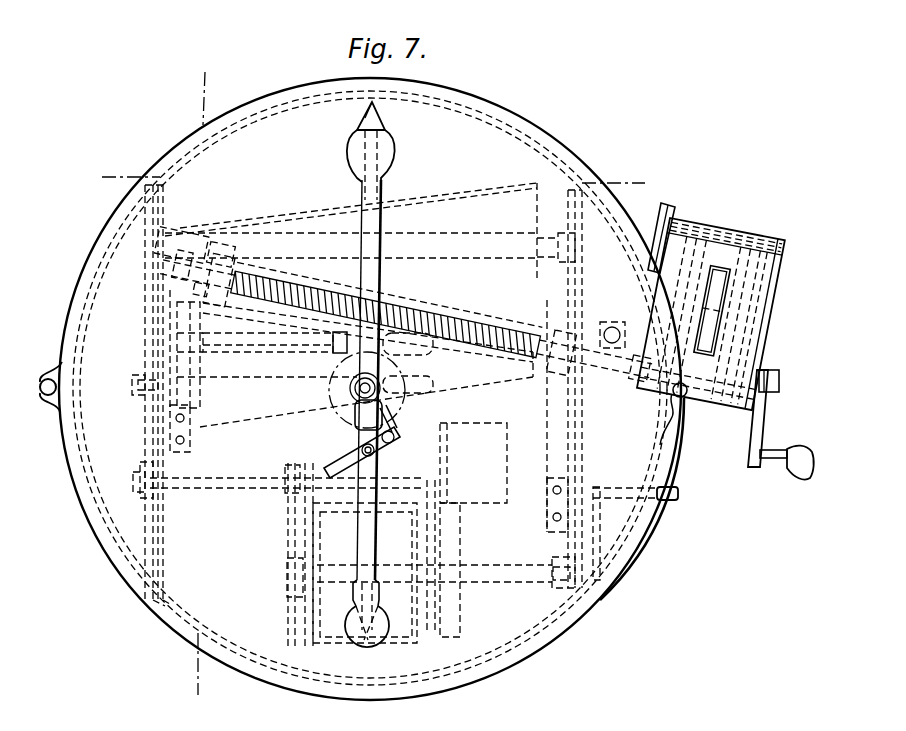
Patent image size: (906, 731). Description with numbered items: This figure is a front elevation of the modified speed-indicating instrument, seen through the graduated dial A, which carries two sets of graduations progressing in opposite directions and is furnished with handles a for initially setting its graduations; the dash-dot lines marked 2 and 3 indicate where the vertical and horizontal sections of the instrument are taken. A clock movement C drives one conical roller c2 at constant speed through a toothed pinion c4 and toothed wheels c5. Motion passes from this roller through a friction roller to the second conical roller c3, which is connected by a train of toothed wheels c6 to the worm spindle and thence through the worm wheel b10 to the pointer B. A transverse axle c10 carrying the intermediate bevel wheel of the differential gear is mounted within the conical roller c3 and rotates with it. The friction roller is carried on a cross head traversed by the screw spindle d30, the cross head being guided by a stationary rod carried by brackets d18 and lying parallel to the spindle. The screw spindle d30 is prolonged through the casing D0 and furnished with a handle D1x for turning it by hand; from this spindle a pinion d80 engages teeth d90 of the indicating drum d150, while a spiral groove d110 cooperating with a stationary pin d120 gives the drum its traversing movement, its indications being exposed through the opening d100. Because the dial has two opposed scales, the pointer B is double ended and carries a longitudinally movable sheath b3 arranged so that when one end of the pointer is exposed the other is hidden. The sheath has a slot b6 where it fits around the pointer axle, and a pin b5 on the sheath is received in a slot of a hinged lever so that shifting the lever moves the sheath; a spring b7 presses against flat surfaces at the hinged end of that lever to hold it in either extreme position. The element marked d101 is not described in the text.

The section line 2 2 is at (200, 385).
The section line 3 3 is at (374, 181).
The handle a is at (367, 395).
The graduated dial A is at (371, 391).
The pointer B is at (356, 132).
The clock movement C is at (335, 593).
The conical roller c2 is at (429, 212).
The conical roller c3 is at (503, 376).
The toothed pinion c4 is at (140, 480).
The toothed wheels c5 is at (148, 300).
The train of toothed wheels c6 is at (200, 378).
The transverse axle c10 is at (668, 487).
The brackets d18 is at (193, 236).
The bearing block d101 is at (240, 252).
The traversing screw spindle d30 is at (270, 288).
The stationary pin d120 is at (652, 303).
The indicating drum d150 is at (688, 226).
The opening d100 is at (708, 268).
The teeth d90 is at (784, 240).
The spiral groove d110 is at (740, 277).
The casing D0 is at (725, 317).
The pinion d80 is at (760, 374).
The handle D1x is at (797, 446).
The worm wheel b10 is at (403, 373).
The slot b6 is at (382, 420).
The spring b7 is at (398, 432).
The pin b5 is at (376, 452).
The sheath b3 is at (360, 528).